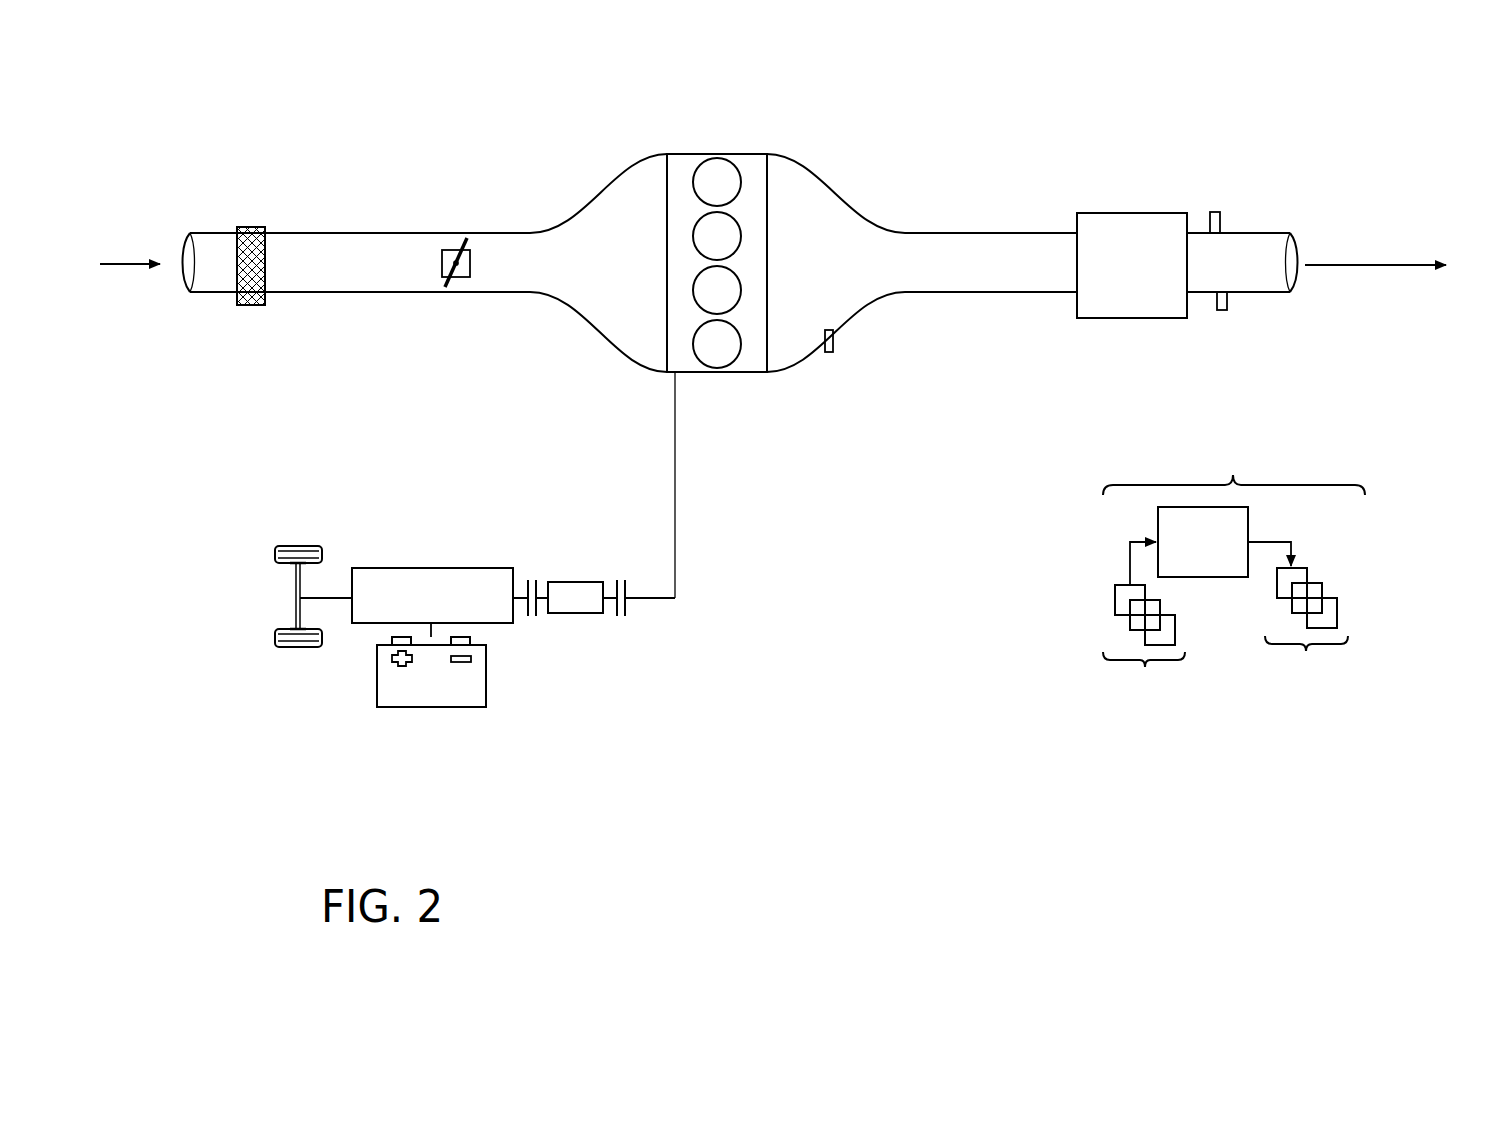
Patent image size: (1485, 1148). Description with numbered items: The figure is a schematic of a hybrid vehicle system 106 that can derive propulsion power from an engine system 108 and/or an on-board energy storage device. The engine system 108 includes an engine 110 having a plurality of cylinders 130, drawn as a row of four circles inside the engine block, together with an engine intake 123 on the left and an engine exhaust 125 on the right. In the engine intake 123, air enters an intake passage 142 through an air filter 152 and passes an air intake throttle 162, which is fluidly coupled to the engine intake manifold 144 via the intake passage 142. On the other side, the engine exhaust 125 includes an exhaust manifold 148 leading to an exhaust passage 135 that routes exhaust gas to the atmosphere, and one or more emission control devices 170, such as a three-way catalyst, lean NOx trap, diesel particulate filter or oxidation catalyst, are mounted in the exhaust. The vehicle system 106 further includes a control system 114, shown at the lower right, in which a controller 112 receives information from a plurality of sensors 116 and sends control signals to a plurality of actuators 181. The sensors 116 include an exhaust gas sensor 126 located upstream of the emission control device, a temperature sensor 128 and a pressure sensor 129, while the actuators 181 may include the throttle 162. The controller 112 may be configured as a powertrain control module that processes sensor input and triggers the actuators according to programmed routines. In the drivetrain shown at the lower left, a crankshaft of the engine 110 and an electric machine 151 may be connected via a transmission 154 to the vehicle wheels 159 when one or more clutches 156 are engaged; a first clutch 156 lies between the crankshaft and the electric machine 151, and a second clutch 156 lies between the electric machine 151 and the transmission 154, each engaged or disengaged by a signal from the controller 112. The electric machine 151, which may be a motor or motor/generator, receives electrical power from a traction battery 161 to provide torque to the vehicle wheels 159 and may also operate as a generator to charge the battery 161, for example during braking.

The hybrid vehicle system 106 is at (204, 133).
The engine system 108 is at (1324, 128).
The engine 110 is at (768, 243).
The controller 112 is at (1203, 542).
The control system 114 is at (1234, 566).
The sensors 116 is at (1144, 623).
The engine intake 123 is at (588, 183).
The engine exhaust 125 is at (886, 188).
The exhaust gas sensor 126 is at (833, 333).
The temperature sensor 128 is at (1222, 311).
The pressure sensor 129 is at (1216, 212).
The cylinders 130 is at (741, 173).
The exhaust passage 135 is at (1270, 233).
The intake passage 142 is at (210, 293).
The engine intake manifold 144 is at (638, 276).
The exhaust manifold 148 is at (859, 276).
The electric machine 151 is at (580, 615).
The air filter 152 is at (251, 227).
The transmission 154 is at (377, 624).
The clutches 156 is at (537, 582).
The vehicle wheels 159 is at (297, 648).
The traction battery 161 is at (433, 708).
The air intake throttle 162 is at (469, 272).
The emission control devices 170 is at (1117, 213).
The actuators 181 is at (1298, 615).